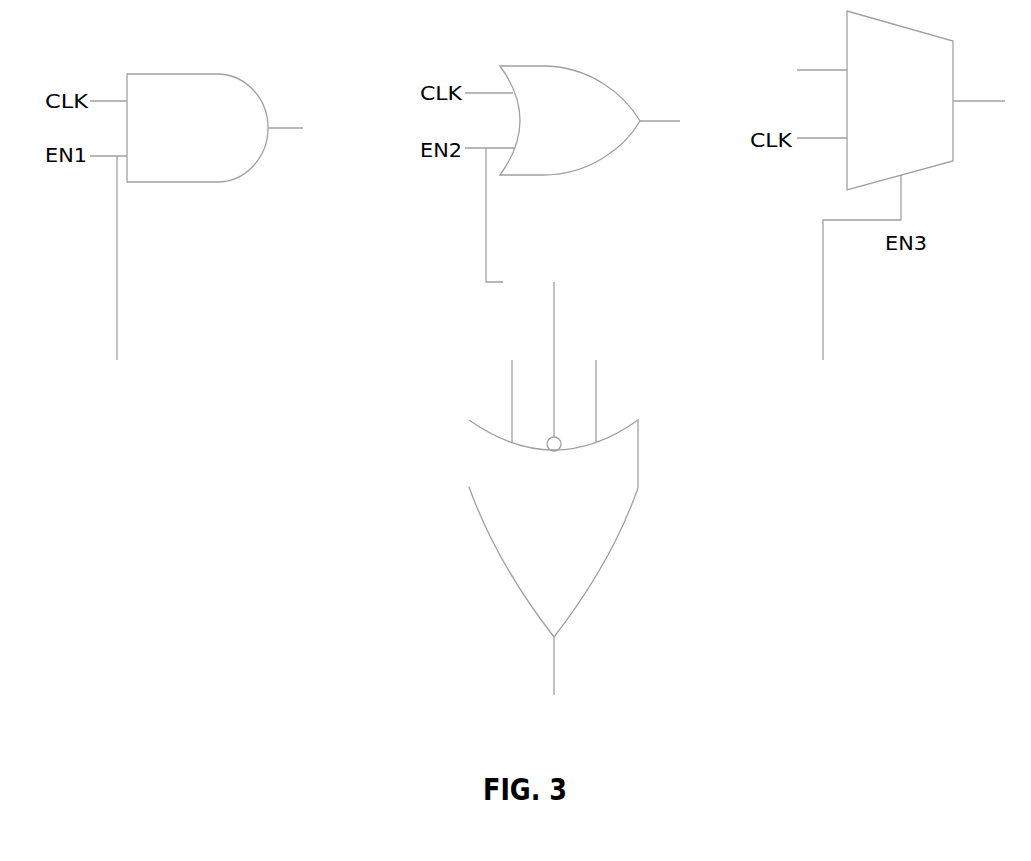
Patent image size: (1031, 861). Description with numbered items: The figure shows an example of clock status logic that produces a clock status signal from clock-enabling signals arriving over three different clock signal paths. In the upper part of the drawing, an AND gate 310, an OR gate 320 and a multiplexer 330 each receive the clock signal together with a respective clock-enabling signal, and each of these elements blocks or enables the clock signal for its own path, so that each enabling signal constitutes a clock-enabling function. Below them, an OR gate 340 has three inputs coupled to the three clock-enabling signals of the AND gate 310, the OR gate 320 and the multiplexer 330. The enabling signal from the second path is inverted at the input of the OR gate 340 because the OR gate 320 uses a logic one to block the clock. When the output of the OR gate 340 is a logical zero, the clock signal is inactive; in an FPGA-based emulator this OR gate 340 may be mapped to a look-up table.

The AND gate 310 is at (211, 136).
The OR gate 320 is at (580, 132).
The multiplexer 330 is at (918, 118).
The OR gate 340 is at (572, 536).